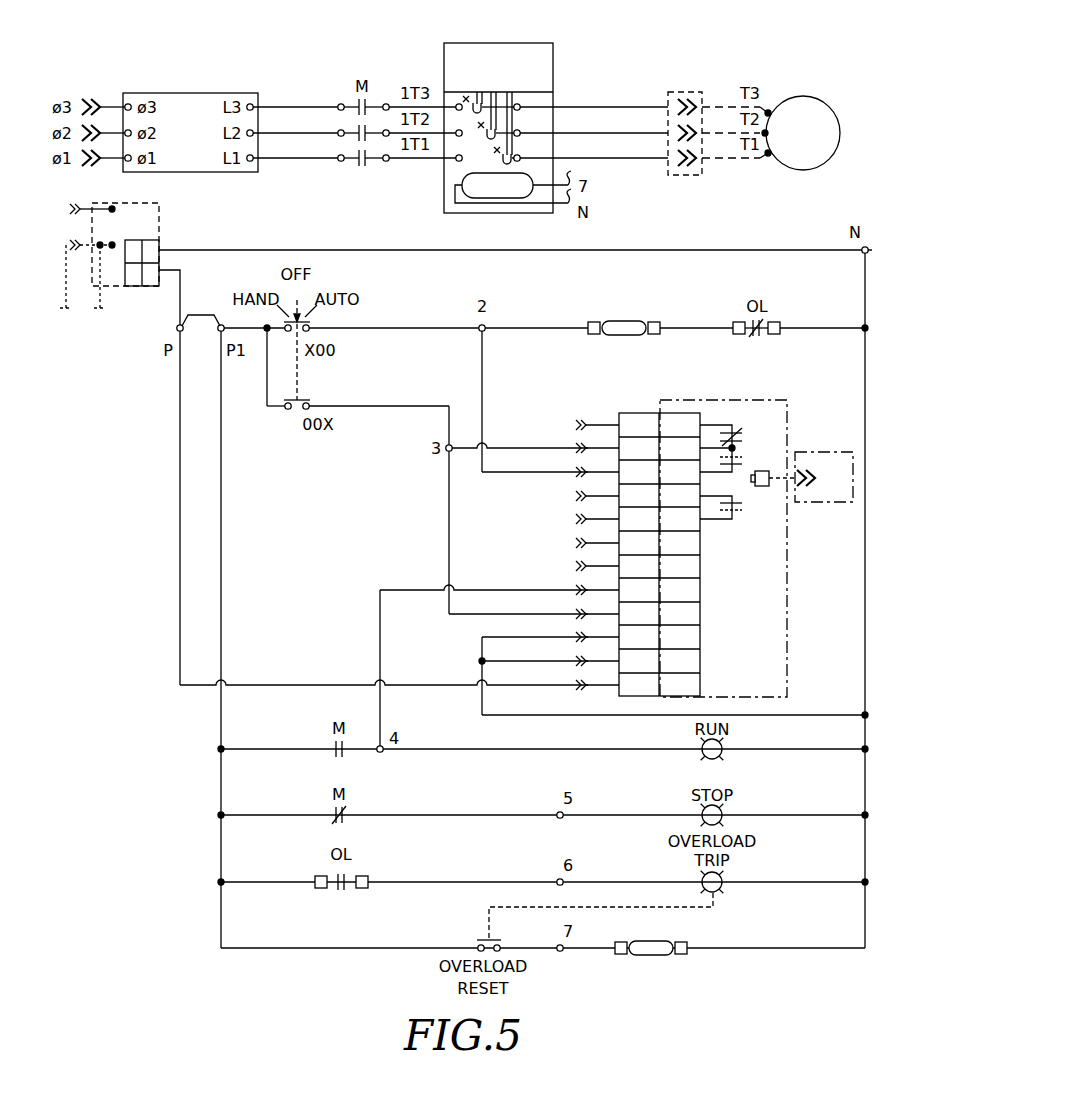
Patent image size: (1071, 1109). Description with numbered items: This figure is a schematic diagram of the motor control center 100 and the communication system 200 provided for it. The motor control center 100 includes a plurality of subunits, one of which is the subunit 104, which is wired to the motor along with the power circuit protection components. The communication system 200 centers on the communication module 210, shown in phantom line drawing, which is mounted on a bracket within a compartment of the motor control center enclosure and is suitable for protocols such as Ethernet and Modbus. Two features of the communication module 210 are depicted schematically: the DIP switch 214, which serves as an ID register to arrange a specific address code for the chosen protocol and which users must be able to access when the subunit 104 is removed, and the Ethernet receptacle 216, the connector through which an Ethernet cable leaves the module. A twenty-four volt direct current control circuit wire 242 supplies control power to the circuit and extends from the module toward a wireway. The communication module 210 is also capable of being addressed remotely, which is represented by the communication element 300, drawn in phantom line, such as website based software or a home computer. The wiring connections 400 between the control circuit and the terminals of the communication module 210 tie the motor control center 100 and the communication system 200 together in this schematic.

The motor control center 100 is at (245, 75).
The subunit 104 is at (660, 68).
The communication system 200 is at (231, 1004).
The communication module 210 is at (750, 400).
The DIP switch 214 is at (622, 410).
The Ethernet receptacle 216 is at (760, 488).
The 24 VDC control circuit wire 242 is at (160, 222).
The communication element 300 is at (818, 503).
The wiring connections 400 is at (566, 422).